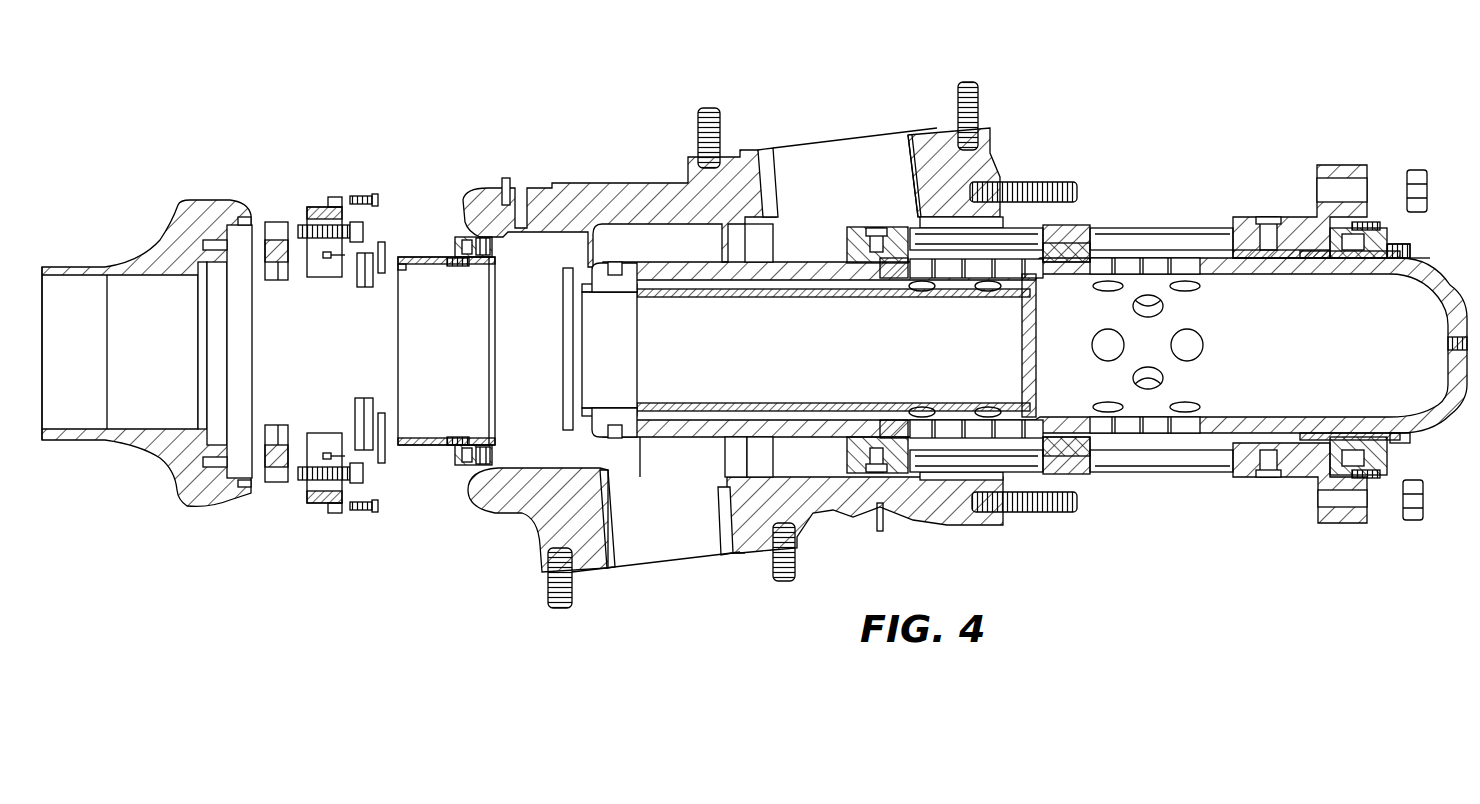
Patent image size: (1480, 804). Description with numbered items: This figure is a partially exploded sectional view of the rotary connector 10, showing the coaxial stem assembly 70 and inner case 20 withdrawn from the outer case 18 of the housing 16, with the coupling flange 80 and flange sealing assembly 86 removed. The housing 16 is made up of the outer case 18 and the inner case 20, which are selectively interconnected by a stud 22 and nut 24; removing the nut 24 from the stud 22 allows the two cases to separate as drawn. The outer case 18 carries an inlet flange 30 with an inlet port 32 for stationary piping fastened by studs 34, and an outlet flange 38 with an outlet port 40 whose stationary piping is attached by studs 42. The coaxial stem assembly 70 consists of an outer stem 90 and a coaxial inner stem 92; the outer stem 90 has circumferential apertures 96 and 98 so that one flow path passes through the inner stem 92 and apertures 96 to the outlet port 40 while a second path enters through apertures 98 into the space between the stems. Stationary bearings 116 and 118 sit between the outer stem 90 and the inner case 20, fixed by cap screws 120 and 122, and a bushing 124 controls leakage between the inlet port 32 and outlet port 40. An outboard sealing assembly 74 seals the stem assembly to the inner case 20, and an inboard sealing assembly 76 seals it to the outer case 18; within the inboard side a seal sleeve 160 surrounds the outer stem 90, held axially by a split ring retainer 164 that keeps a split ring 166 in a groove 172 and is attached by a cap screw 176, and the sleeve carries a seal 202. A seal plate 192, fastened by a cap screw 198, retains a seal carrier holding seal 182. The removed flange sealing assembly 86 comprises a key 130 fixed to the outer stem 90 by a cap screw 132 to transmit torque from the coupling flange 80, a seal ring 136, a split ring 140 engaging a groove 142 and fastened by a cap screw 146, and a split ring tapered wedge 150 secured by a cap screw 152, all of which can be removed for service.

The rotary connector 10 is at (803, 70).
The housing 16 is at (512, 530).
The outer case 18 is at (618, 188).
The inner case 20 is at (1075, 225).
The stud 22 is at (1040, 182).
The nut 24 is at (1415, 170).
The inlet flange 30 is at (742, 560).
The inlet port 32 is at (615, 563).
The studs 34 is at (555, 587).
The outlet flange 38 is at (925, 130).
The outlet port 40 is at (770, 165).
The studs 42 is at (715, 122).
The coaxial stem assembly 70 is at (1429, 258).
The outboard sealing assembly 74 is at (1397, 233).
The inboard sealing assembly 76 is at (425, 205).
The coupling flange 80 is at (195, 208).
The flange sealing assembly 86 is at (325, 347).
The outer stem 90 is at (808, 270).
The inner stem 92 is at (875, 298).
The apertures 96 is at (1175, 350).
The apertures 98 is at (920, 273).
The stationary bearing 116 is at (1283, 258).
The stationary bearing 118 is at (865, 268).
The cap screw 120 is at (1268, 217).
The cap screw 122 is at (876, 228).
The bushing 124 is at (1067, 258).
The key 130 is at (643, 270).
The cap screw 132 is at (613, 262).
The seal ring 136 is at (563, 305).
The split ring 140 is at (280, 282).
The groove 142 is at (652, 290).
The cap screw 146 is at (308, 233).
The split ring tapered wedge 150 is at (323, 277).
The cap screw 152 is at (365, 196).
The seal sleeve 160 is at (443, 265).
The split ring retainer 164 is at (362, 290).
The split ring 166 is at (384, 245).
The groove 172 is at (710, 262).
The cap screw 176 is at (340, 425).
The seal 182 is at (496, 249).
The seal plate 192 is at (462, 479).
The cap screw 198 is at (448, 471).
The seal 202 is at (490, 272).